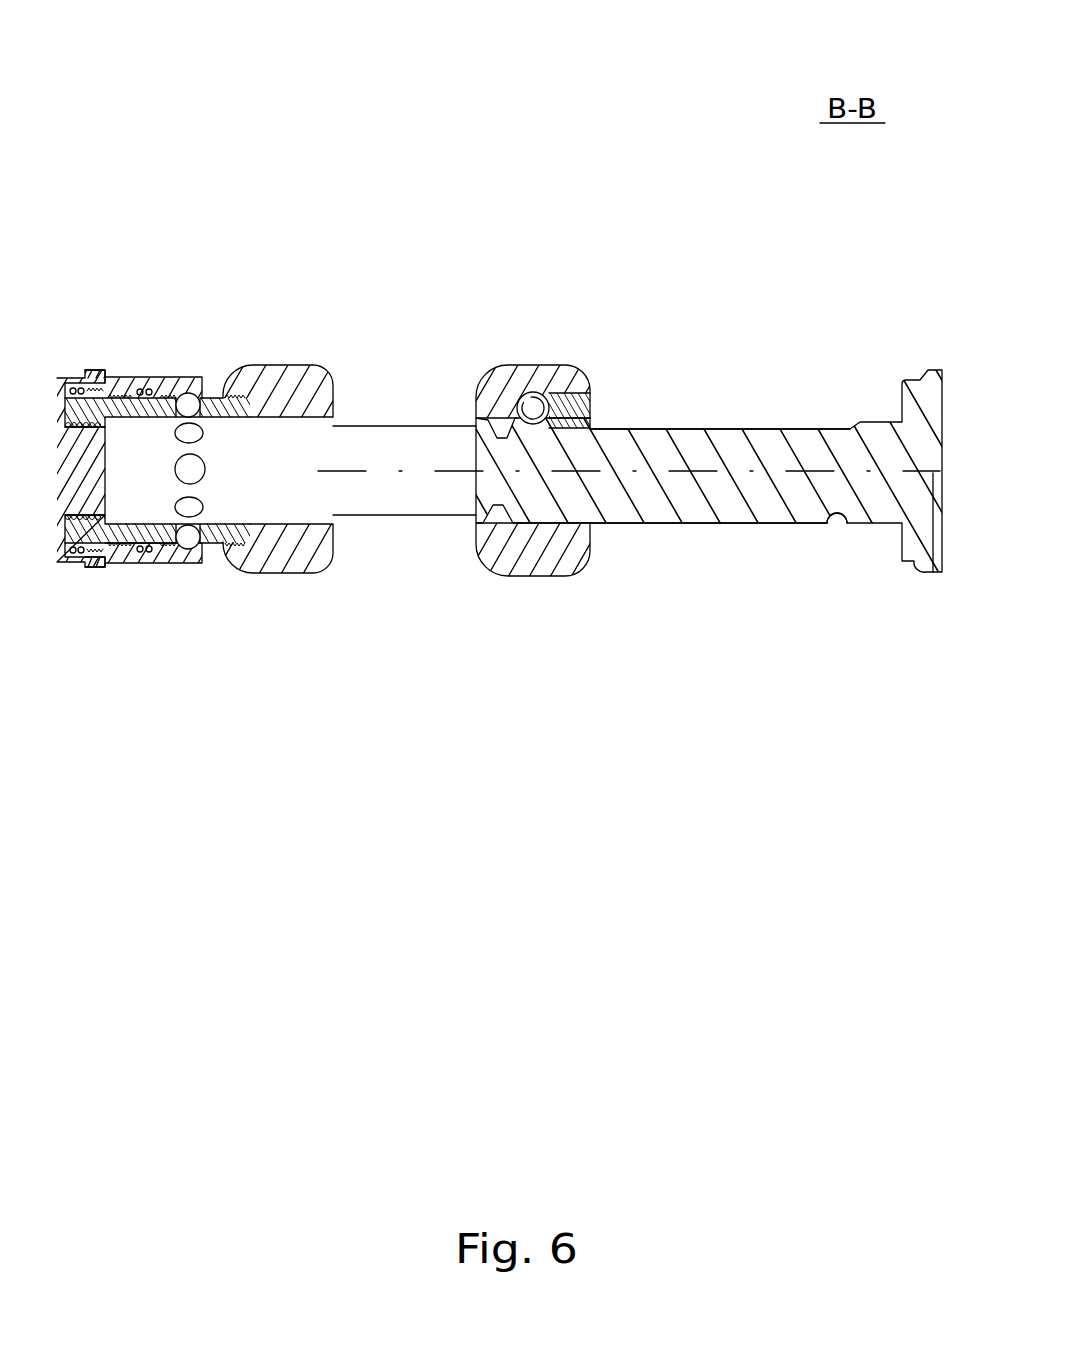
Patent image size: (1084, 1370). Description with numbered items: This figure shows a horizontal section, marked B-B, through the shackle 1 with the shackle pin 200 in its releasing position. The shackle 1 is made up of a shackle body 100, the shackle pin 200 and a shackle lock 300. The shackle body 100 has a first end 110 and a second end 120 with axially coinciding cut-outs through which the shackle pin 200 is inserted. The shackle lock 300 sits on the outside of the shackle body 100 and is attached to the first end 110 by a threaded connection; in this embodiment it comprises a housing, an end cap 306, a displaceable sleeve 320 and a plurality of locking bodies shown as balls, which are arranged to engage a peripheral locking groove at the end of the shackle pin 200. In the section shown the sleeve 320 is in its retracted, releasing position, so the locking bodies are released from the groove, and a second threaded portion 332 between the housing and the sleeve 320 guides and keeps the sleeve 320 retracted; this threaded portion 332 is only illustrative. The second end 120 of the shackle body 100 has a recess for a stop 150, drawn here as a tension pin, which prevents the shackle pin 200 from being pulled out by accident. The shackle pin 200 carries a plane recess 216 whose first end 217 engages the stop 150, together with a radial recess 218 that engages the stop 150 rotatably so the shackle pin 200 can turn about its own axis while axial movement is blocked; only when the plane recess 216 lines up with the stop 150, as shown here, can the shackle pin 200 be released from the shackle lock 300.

The shackle 1 is at (230, 121).
The shackle body 100 is at (407, 426).
The first end 110 is at (277, 365).
The second end 120 is at (533, 367).
The stop 150 is at (567, 388).
The shackle pin 200 is at (937, 575).
The plane recess 216 is at (684, 429).
The first end 217 is at (530, 415).
The radial recess 218 is at (840, 524).
The shackle lock 300 is at (133, 377).
The end cap 306 is at (73, 563).
The sleeve 320 is at (153, 563).
The second threaded portion 332 is at (103, 563).